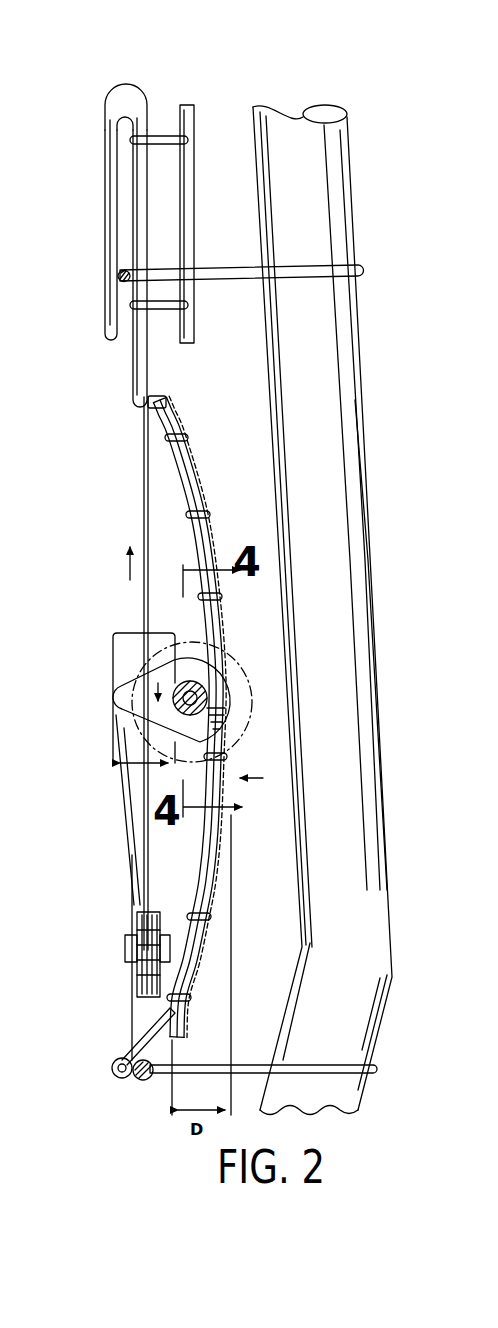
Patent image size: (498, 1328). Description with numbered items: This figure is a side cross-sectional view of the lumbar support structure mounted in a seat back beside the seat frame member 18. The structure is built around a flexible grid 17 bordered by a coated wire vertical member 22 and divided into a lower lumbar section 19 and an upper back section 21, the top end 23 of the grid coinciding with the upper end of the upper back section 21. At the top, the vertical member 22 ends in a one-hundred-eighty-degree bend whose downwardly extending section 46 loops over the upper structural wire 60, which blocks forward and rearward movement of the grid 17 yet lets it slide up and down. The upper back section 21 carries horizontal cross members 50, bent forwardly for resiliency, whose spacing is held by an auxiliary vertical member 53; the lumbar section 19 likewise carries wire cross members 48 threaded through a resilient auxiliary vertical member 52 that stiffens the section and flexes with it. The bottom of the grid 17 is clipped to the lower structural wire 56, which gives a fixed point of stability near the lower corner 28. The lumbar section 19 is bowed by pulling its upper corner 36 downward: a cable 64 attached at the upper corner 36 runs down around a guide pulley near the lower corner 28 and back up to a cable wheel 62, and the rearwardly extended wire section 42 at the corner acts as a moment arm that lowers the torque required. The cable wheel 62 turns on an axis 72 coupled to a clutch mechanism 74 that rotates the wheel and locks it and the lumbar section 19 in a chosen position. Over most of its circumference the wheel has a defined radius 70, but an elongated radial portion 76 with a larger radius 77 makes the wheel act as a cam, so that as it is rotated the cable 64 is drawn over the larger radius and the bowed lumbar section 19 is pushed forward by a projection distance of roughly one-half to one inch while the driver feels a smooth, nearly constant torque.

The flexible grid 17 is at (122, 74).
The frame member 18 is at (348, 176).
The lumbar section 19 is at (240, 792).
The upper back section 21 is at (76, 215).
The vertical member 22 is at (178, 463).
The top end 23 is at (196, 101).
The lower corner 28 is at (120, 1075).
The upper corner 36 is at (135, 407).
The rearwardly extended wire section 42 is at (160, 396).
The downwardly extending section 46 is at (106, 158).
The cross member 48 is at (205, 512).
The cross member 50 is at (168, 150).
The auxiliary vertical member 52 is at (197, 456).
The auxiliary vertical member 53 is at (194, 228).
The lower structural wire 56 is at (378, 1069).
The upper structural wire 60 is at (348, 266).
The cable wheel 62 is at (110, 698).
The cable 64 is at (143, 512).
The radius 70 is at (205, 685).
The axis 72 is at (215, 700).
The clutch mechanism 74 is at (139, 669).
The elongated radial portion 76 is at (164, 633).
The radius 77 is at (152, 762).